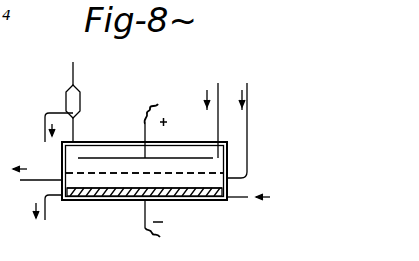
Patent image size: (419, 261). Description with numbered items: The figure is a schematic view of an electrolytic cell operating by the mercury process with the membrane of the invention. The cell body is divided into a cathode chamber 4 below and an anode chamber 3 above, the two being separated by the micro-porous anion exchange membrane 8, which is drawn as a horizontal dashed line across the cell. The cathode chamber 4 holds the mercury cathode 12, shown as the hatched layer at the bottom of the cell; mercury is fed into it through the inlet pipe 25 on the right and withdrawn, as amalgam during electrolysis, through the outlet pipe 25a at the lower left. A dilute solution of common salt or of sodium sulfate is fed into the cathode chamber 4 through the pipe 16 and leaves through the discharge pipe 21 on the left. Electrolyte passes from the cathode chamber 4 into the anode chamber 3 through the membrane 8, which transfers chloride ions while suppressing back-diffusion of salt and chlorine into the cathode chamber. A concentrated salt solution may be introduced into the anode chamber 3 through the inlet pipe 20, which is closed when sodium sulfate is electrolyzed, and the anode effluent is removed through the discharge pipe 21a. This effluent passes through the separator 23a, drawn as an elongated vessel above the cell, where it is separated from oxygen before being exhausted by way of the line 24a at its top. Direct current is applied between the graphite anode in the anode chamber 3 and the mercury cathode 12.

The anode chamber 3 is at (169, 152).
The cathode chamber 4 is at (182, 188).
The micro-porous anion exchange membrane 8 is at (106, 174).
The mercury cathode 12 is at (130, 192).
The pipe 16 is at (255, 102).
The inlet pipe 20 is at (217, 93).
The discharge pipe 21 is at (25, 181).
The discharge pipe 21a is at (41, 121).
The separator 23a is at (80, 95).
The supply line 24a is at (75, 73).
The inlet pipe 25 is at (242, 197).
The outlet pipe 25a is at (45, 220).